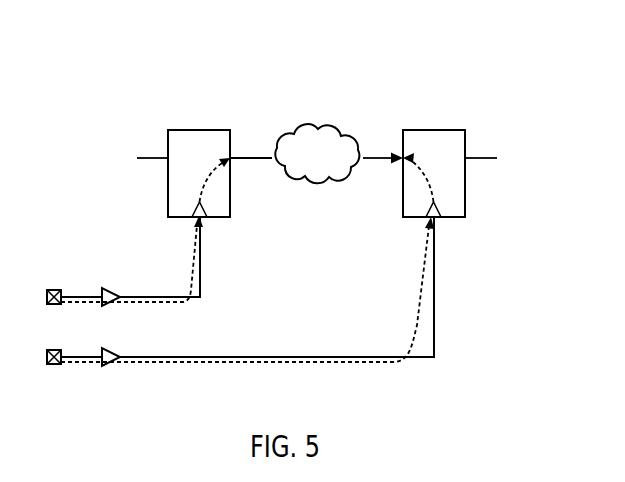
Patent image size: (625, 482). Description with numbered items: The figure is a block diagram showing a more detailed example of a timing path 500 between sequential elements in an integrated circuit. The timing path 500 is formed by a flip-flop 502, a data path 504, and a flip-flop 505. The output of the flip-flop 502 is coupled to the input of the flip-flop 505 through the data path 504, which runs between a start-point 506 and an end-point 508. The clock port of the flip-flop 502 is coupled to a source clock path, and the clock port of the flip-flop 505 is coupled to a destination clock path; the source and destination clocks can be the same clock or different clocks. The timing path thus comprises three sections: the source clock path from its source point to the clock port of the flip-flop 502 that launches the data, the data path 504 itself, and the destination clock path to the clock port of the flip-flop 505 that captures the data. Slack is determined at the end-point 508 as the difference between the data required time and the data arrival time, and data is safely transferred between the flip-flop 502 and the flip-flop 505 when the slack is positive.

The timing path 500 is at (161, 73).
The flip-flop 502 is at (201, 130).
The data path 504 is at (294, 153).
The flip-flop 505 is at (425, 130).
The start-point 506 is at (206, 221).
The end-point 508 is at (393, 143).